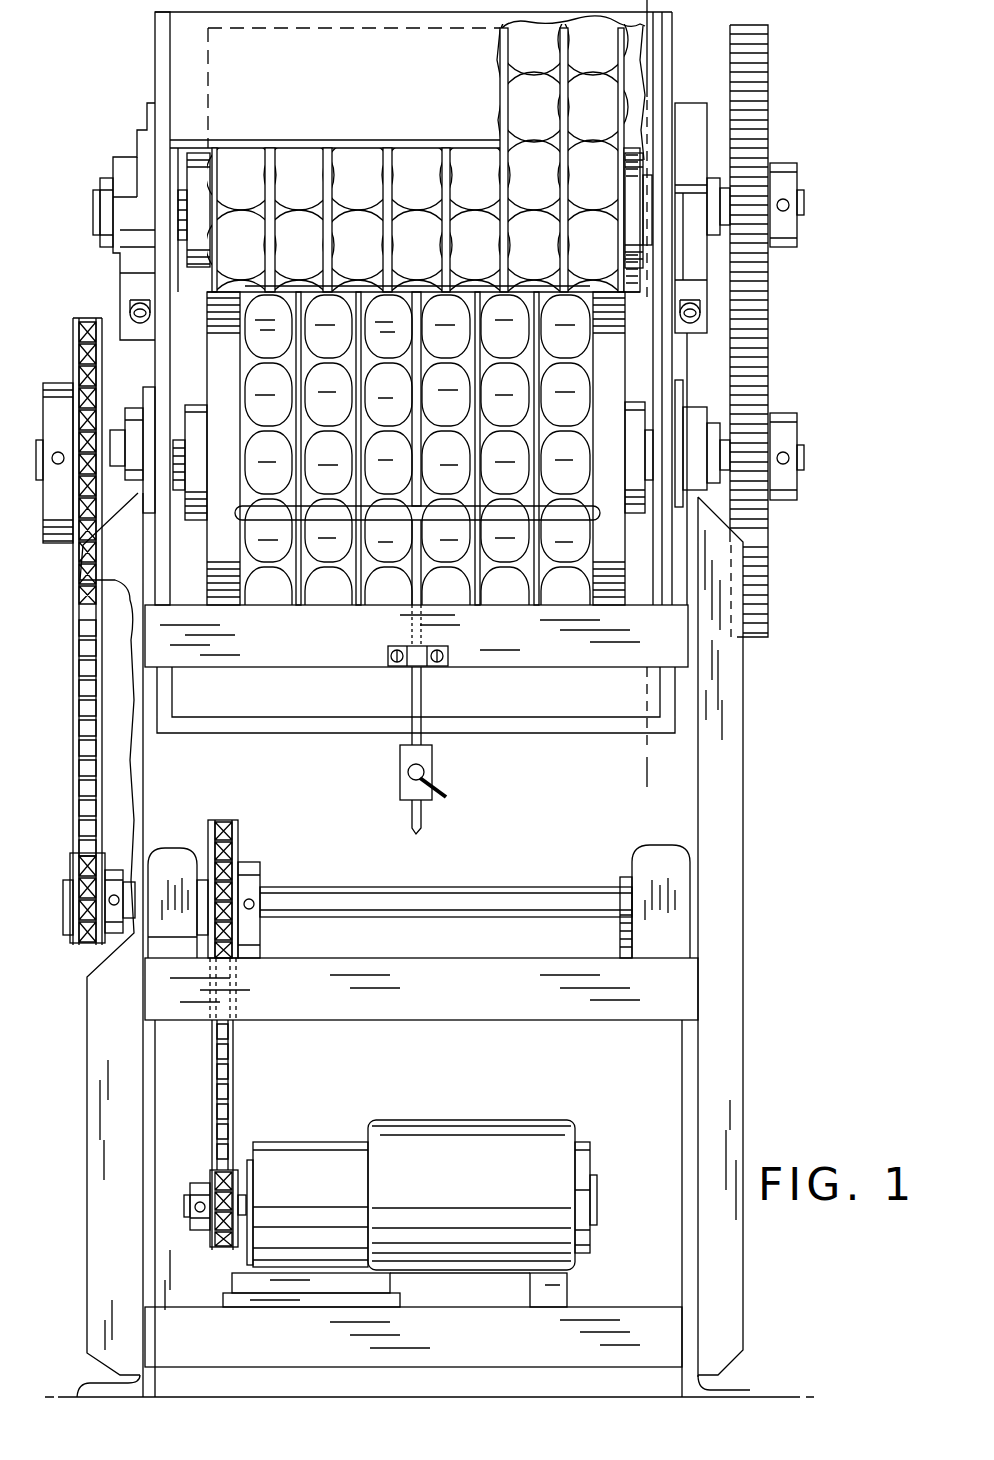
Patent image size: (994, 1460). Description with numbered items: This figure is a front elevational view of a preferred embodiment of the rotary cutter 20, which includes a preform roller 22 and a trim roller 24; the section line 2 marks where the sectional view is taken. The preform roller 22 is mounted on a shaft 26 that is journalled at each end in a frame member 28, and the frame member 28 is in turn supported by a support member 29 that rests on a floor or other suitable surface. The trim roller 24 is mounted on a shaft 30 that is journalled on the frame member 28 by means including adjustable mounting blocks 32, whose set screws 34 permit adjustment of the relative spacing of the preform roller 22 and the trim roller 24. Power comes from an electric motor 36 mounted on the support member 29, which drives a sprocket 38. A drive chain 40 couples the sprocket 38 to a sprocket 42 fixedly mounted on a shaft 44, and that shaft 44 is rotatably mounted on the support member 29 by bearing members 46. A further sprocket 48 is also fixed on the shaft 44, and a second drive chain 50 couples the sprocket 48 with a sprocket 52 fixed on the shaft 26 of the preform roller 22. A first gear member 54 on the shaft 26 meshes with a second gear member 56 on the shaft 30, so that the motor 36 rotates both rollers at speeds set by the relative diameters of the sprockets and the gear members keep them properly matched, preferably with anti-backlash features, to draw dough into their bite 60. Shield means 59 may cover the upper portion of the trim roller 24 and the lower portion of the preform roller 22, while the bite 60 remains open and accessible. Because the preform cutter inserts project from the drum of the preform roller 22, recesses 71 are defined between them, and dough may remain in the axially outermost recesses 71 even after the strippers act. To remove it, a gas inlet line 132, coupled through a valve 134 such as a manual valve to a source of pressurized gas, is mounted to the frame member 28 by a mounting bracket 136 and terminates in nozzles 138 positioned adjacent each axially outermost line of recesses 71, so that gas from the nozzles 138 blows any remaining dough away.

The section line 2- 2 is at (660, 25).
The rotary cutter 20 is at (760, 884).
The preform roller 22 is at (585, 568).
The trim roller 24 is at (540, 47).
The shaft 26 is at (177, 457).
The frame member 28 is at (163, 355).
The support member 29 is at (723, 827).
The shaft 30 is at (643, 200).
The adjustable mounting blocks 32 is at (133, 282).
The set screws 34 is at (125, 305).
The electric motor 36 is at (318, 1167).
The sprocket 38 is at (210, 1170).
The drive chain 40 is at (230, 1068).
The sprocket 42 is at (237, 847).
The shaft 44 is at (523, 902).
The bearing members 46 is at (163, 863).
The sprocket 48 is at (70, 882).
The drive chain 50 is at (75, 698).
The sprocket 52 is at (83, 357).
The first gear member 54 is at (767, 327).
The second gear member 56 is at (755, 140).
The shield means 59 is at (223, 47).
The bite 60 is at (228, 287).
The recesses 71 is at (247, 427).
The gas inlet line 132 is at (418, 693).
The valve 134 is at (424, 755).
The mounting bracket 136 is at (385, 667).
The nozzles 138 is at (260, 515).